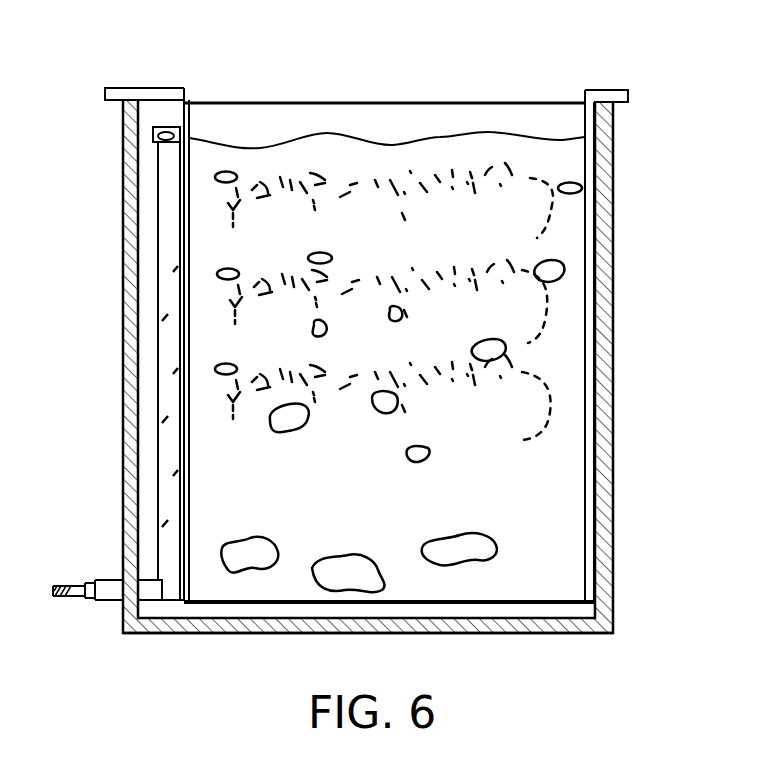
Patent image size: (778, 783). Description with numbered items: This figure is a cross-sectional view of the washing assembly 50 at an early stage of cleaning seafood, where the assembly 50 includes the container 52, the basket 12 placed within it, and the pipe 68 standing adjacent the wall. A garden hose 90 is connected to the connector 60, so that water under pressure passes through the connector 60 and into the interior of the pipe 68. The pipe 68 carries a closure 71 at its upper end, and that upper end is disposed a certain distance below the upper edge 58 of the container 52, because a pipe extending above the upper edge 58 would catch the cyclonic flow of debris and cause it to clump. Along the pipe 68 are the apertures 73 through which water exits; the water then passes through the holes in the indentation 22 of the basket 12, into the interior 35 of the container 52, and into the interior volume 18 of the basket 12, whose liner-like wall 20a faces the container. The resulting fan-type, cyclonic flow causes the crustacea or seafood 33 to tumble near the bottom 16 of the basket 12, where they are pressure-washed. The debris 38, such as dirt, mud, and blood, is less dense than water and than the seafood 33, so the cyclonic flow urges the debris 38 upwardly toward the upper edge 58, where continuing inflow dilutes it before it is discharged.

The basket 12 is at (135, 88).
The upper edge 58 is at (335, 102).
The closure 71 is at (166, 128).
The tube perforations 73 is at (175, 271).
The pipe 68 is at (157, 340).
The indentation 22 is at (177, 347).
The debris 38 is at (473, 182).
The crustacea or seafood 33 is at (268, 537).
The assembly 50 is at (655, 152).
The container 52 is at (617, 235).
The interior 35 is at (597, 473).
The inner liner 20a is at (585, 430).
The bottom 16 is at (550, 603).
The interior volume 18 is at (551, 626).
The connector 60 is at (108, 580).
The garden hose 90 is at (70, 588).